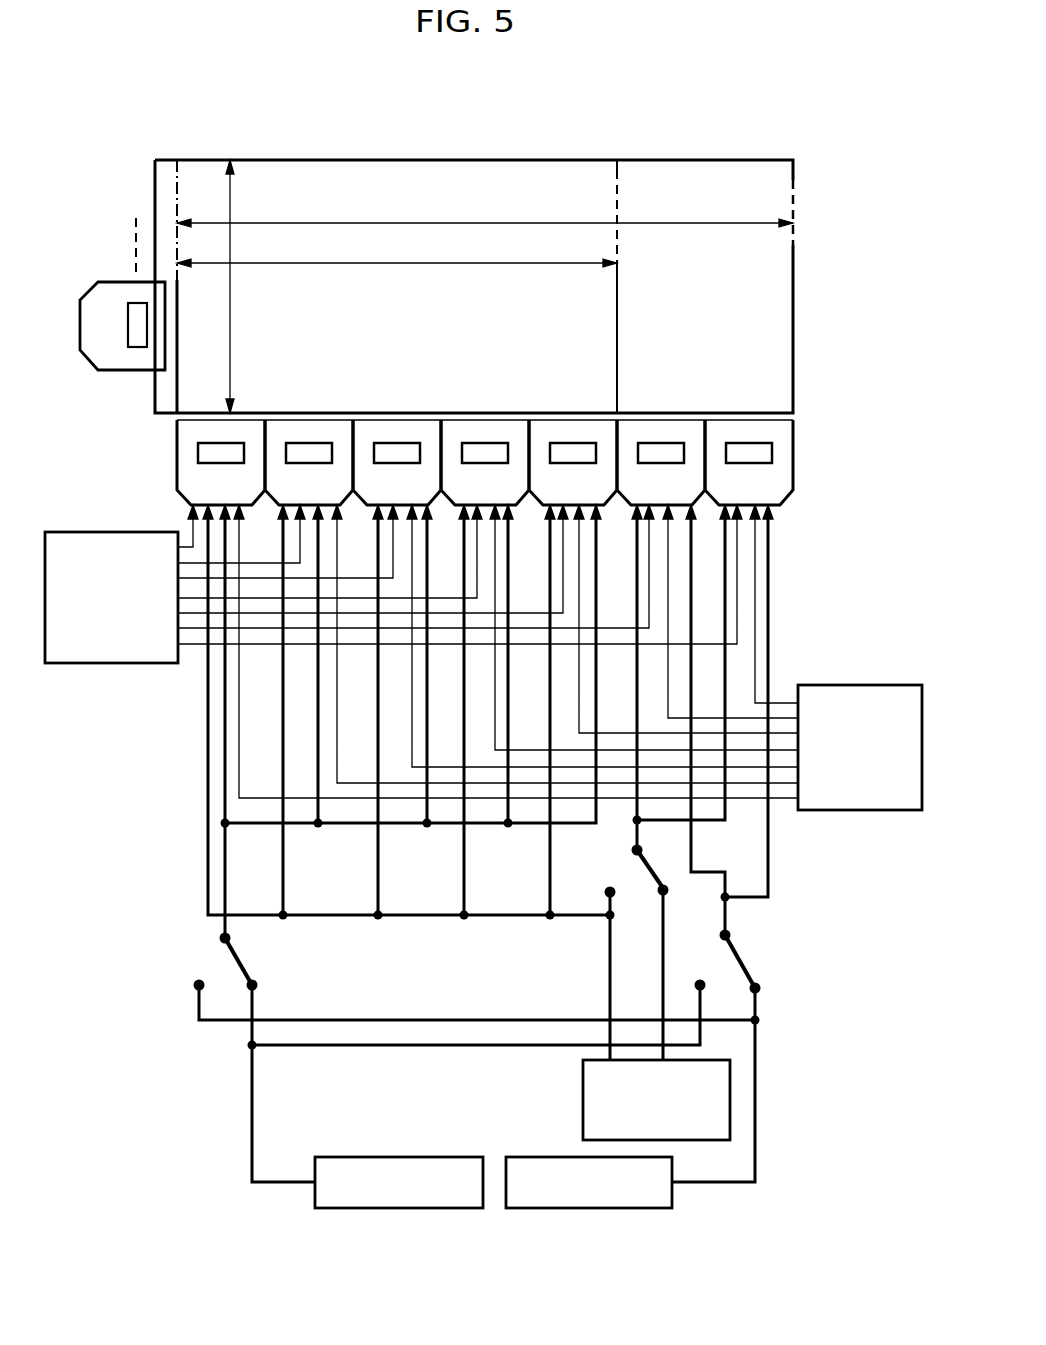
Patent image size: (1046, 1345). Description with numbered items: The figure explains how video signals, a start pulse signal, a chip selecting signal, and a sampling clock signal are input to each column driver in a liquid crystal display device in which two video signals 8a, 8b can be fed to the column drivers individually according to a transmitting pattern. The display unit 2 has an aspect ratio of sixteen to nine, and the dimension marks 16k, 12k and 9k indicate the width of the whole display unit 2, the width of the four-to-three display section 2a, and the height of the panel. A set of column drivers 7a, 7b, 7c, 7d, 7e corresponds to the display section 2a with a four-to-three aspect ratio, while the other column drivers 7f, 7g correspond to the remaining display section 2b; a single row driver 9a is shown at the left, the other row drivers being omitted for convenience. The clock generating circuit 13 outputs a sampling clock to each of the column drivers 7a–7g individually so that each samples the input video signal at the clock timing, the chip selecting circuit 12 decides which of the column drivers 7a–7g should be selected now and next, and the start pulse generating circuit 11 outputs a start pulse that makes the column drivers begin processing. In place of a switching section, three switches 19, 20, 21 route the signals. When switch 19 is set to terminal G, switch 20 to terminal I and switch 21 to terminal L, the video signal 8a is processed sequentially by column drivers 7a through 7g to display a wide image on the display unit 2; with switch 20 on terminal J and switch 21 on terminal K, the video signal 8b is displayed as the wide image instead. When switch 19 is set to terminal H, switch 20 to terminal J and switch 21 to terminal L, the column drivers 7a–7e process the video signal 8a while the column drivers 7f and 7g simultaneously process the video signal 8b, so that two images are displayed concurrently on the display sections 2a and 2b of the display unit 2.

The display unit 2 is at (682, 131).
The display section 2a is at (580, 178).
The remaining display section 2b is at (642, 178).
The column driver 7a is at (240, 432).
The column driver 7b is at (330, 432).
The column driver 7c is at (425, 432).
The column driver 7d is at (509, 432).
The column driver 7e is at (567, 432).
The column driver 7f is at (649, 432).
The column driver 7g is at (734, 432).
The video signal 8a is at (423, 1155).
The video signal 8b is at (535, 1155).
The row driver 9a is at (117, 367).
The dimension 9k is at (246, 286).
The dimension 12k is at (397, 249).
The dimension 16k is at (485, 208).
The start pulse generating circuit 11 is at (583, 1096).
The chip selecting circuit 12 is at (853, 803).
The clock generating circuit 13 is at (134, 655).
The switch 19 is at (628, 861).
The switch 20 is at (751, 948).
The switch 21 is at (256, 957).